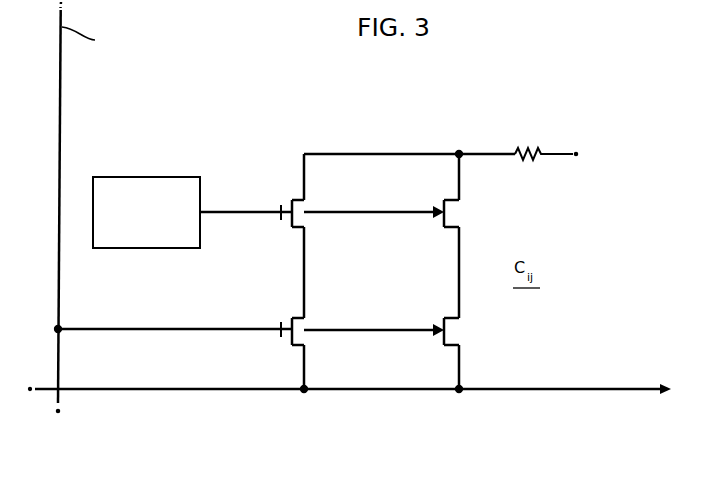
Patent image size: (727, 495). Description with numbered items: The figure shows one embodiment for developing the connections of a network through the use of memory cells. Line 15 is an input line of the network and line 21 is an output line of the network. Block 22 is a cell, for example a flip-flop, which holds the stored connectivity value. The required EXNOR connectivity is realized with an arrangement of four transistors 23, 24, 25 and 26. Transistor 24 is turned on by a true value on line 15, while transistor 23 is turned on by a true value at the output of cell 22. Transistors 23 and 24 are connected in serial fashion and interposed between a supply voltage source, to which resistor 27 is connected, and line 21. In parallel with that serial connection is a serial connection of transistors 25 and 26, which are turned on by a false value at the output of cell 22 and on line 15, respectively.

The input line 15 is at (60, 287).
The output line 21 is at (549, 391).
The cell 22 is at (143, 177).
The transistor 23 is at (285, 205).
The transistor 24 is at (285, 322).
The transistor 25 is at (381, 204).
The transistor 26 is at (381, 322).
The resistor 27 is at (565, 149).